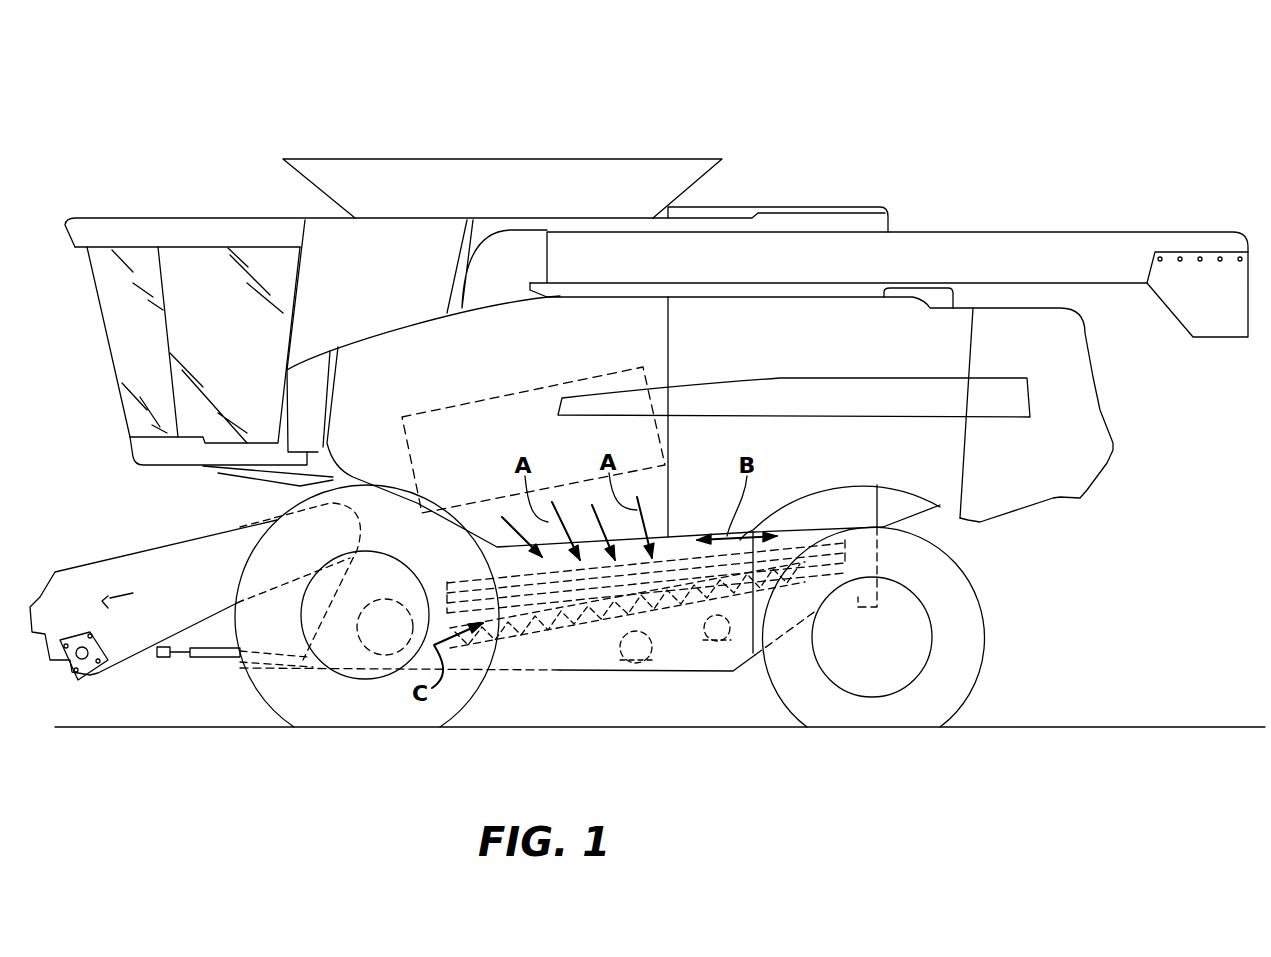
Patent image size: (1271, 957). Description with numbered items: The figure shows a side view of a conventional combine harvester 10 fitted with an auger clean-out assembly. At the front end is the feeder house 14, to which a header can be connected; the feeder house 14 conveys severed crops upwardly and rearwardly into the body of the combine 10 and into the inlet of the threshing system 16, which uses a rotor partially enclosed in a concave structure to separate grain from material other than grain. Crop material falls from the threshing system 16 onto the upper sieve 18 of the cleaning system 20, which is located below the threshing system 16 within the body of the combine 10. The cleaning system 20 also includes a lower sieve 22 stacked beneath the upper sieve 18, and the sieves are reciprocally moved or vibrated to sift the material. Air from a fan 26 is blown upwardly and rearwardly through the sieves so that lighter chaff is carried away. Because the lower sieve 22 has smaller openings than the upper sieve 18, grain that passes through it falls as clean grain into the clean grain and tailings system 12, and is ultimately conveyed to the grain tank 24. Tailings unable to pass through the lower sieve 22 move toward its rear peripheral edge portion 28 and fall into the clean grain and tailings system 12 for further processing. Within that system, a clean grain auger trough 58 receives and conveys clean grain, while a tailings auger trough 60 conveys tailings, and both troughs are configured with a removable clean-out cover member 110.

The combine harvester 10 is at (1072, 145).
The clean grain and tailings system 12 is at (828, 596).
The feeder house 14 is at (92, 562).
The threshing system 16 is at (635, 368).
The upper sieve 18 is at (680, 557).
The cleaning system 20 is at (799, 537).
The lower sieve 22 is at (440, 610).
The grain tank 24 is at (663, 158).
The fan 26 is at (370, 650).
The rear peripheral edge portion 28 is at (880, 552).
The clean grain auger trough 58 is at (600, 650).
The tailings auger trough 60 is at (690, 642).
The clean-out cover member 110 is at (623, 668).